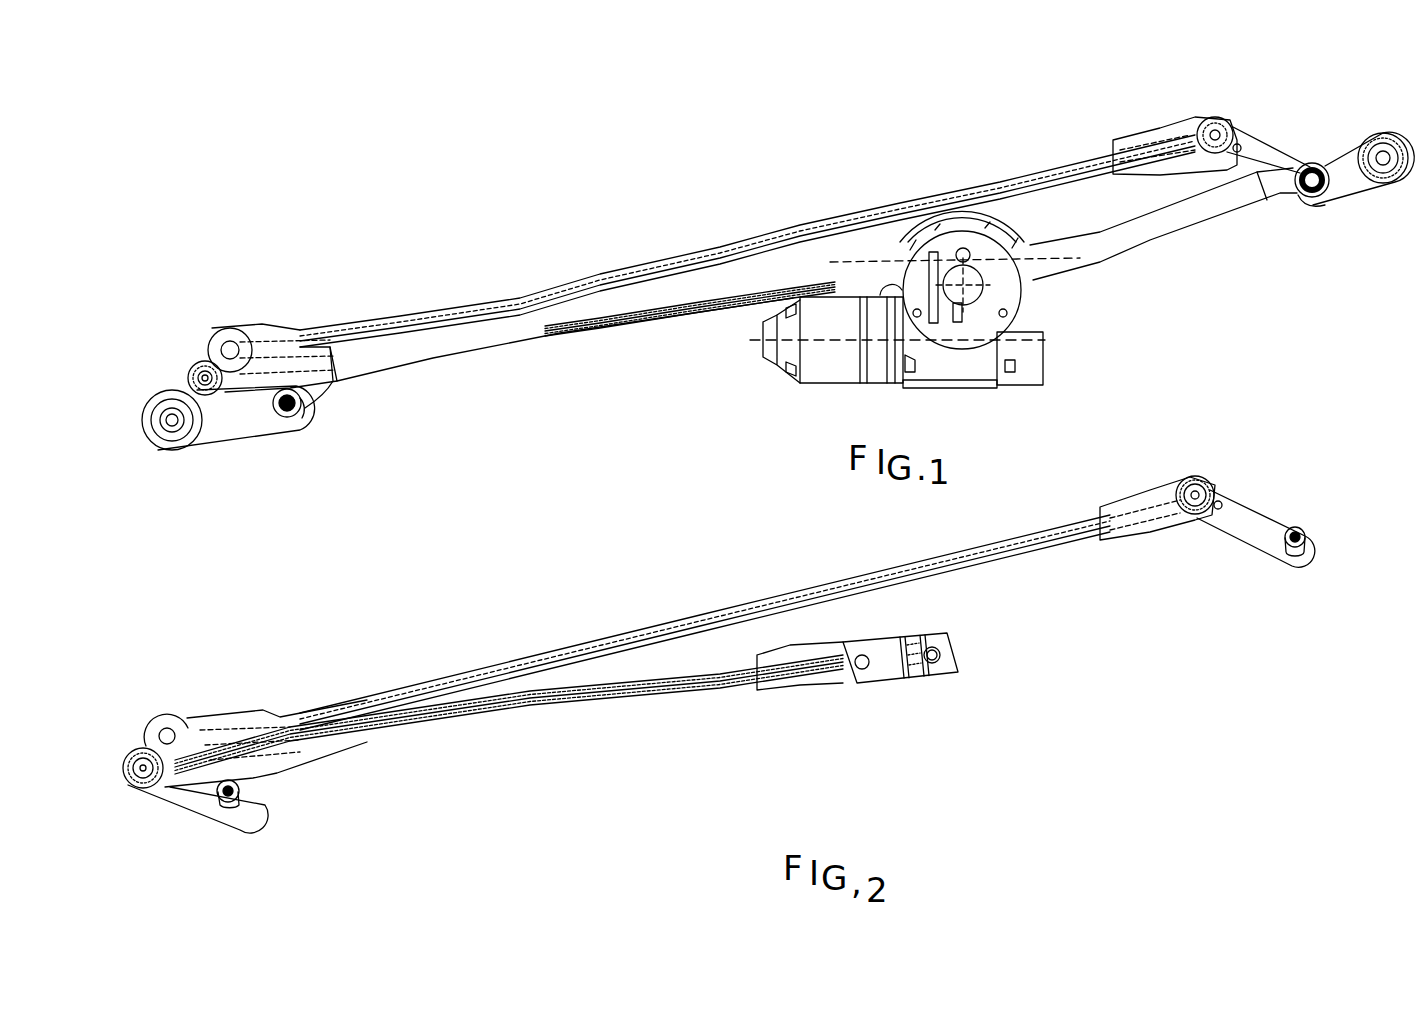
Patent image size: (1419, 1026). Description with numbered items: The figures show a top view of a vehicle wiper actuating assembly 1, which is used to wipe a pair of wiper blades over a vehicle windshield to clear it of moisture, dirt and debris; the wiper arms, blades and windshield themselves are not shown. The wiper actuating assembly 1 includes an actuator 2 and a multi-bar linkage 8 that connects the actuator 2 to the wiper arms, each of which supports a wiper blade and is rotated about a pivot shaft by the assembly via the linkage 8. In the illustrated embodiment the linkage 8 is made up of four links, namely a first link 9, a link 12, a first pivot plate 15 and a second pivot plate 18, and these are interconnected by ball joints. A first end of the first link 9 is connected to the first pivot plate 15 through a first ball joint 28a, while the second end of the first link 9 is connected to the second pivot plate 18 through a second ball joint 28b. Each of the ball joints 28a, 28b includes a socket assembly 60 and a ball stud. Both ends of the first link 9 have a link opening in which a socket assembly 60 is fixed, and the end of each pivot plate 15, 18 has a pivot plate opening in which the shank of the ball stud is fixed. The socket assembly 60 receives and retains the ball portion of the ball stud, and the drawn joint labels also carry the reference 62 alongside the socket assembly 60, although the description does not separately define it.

In FIG. 1, the vehicle wiper actuating assembly 1 is at (576, 77).
In FIG. 1, the actuator 2 is at (825, 367).
In FIG. 1, the multi-bar linkage 8 is at (472, 265).
In FIG. 2, the multi-bar linkage 8 is at (616, 597).
In FIG. 1, the first link 9 is at (1002, 182).
In FIG. 2, the first link 9 is at (1032, 548).
In FIG. 1, the link 12 is at (728, 323).
In FIG. 2, the link 12 is at (688, 697).
In FIG. 1, the first pivot plate 15 is at (212, 346).
In FIG. 2, the first pivot plate 15 is at (152, 727).
In FIG. 1, the second pivot plate 18 is at (1275, 158).
In FIG. 2, the second pivot plate 18 is at (1262, 523).
In FIG. 1, the first ball joint 28a is at (318, 458).
In FIG. 2, the first ball joint 28a is at (360, 786).
In FIG. 1, the second ball joint 28b is at (1274, 243).
In FIG. 2, the second ball joint 28b is at (1280, 581).
In FIG. 1, the socket assembly 60 is at (800, 290).
In FIG. 2, the socket assembly 60 is at (761, 664).
In FIG. 1, the socket 62 is at (800, 290).
In FIG. 2, the socket 62 is at (761, 664).